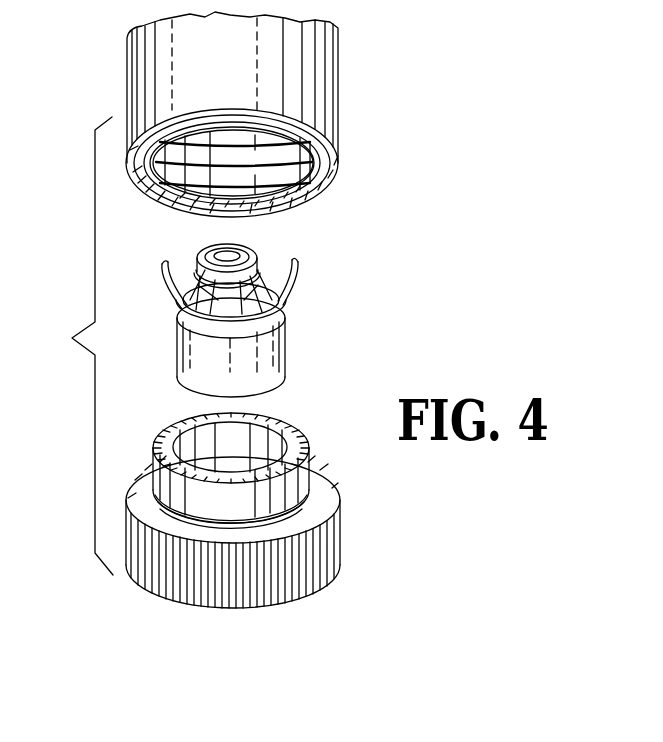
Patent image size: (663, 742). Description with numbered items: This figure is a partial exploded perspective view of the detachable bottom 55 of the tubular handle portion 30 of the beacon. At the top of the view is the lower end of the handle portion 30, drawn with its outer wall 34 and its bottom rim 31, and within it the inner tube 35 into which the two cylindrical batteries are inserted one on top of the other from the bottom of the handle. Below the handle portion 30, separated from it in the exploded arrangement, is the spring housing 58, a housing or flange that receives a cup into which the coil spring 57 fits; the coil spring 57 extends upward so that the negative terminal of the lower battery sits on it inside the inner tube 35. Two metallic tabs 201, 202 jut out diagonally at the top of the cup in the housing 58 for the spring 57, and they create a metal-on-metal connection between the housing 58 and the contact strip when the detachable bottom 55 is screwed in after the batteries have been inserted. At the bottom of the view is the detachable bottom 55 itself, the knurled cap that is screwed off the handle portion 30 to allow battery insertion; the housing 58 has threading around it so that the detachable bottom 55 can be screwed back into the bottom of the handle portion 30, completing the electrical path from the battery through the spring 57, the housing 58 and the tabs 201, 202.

The tubular handle portion 30 is at (118, 104).
The outer cap cylinder 34 is at (133, 71).
The inner thread ring 31 is at (146, 195).
The inner tube 35 is at (285, 188).
The coil spring 57 is at (247, 257).
The housing 58 is at (277, 348).
The metallic tab 201 is at (163, 282).
The metallic tab 202 is at (295, 290).
The detachable bottom 55 is at (290, 577).